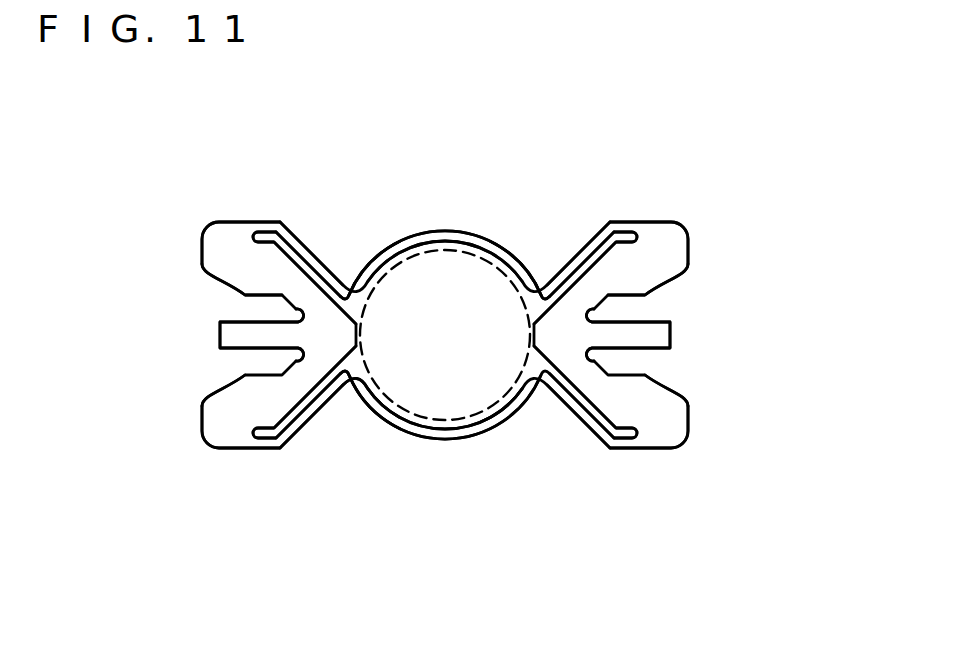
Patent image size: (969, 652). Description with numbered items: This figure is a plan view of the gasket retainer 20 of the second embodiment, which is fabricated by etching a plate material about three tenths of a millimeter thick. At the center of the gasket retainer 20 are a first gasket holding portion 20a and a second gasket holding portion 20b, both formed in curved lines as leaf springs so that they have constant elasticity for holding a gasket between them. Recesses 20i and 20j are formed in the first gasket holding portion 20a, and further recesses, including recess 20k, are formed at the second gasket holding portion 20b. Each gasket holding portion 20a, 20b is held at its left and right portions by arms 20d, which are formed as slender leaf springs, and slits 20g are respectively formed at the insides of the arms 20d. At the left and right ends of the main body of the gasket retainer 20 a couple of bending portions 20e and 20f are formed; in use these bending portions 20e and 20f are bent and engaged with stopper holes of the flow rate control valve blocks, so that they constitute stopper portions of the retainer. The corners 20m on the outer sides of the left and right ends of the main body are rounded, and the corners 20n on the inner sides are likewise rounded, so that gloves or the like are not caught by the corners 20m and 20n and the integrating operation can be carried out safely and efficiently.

The gasket retainer 20 is at (676, 199).
The first gasket holding portion 20a is at (443, 231).
The second gasket holding portion 20b is at (439, 438).
The arms 20d is at (597, 255).
The bending portion 20e is at (663, 340).
The bending portion 20f is at (222, 337).
The slits 20g is at (566, 266).
The recess 20i is at (388, 246).
The recess 20j is at (491, 243).
The recess 20k is at (373, 403).
The corners on outer sides 20m is at (213, 222).
The corners on inner sides 20n is at (202, 270).